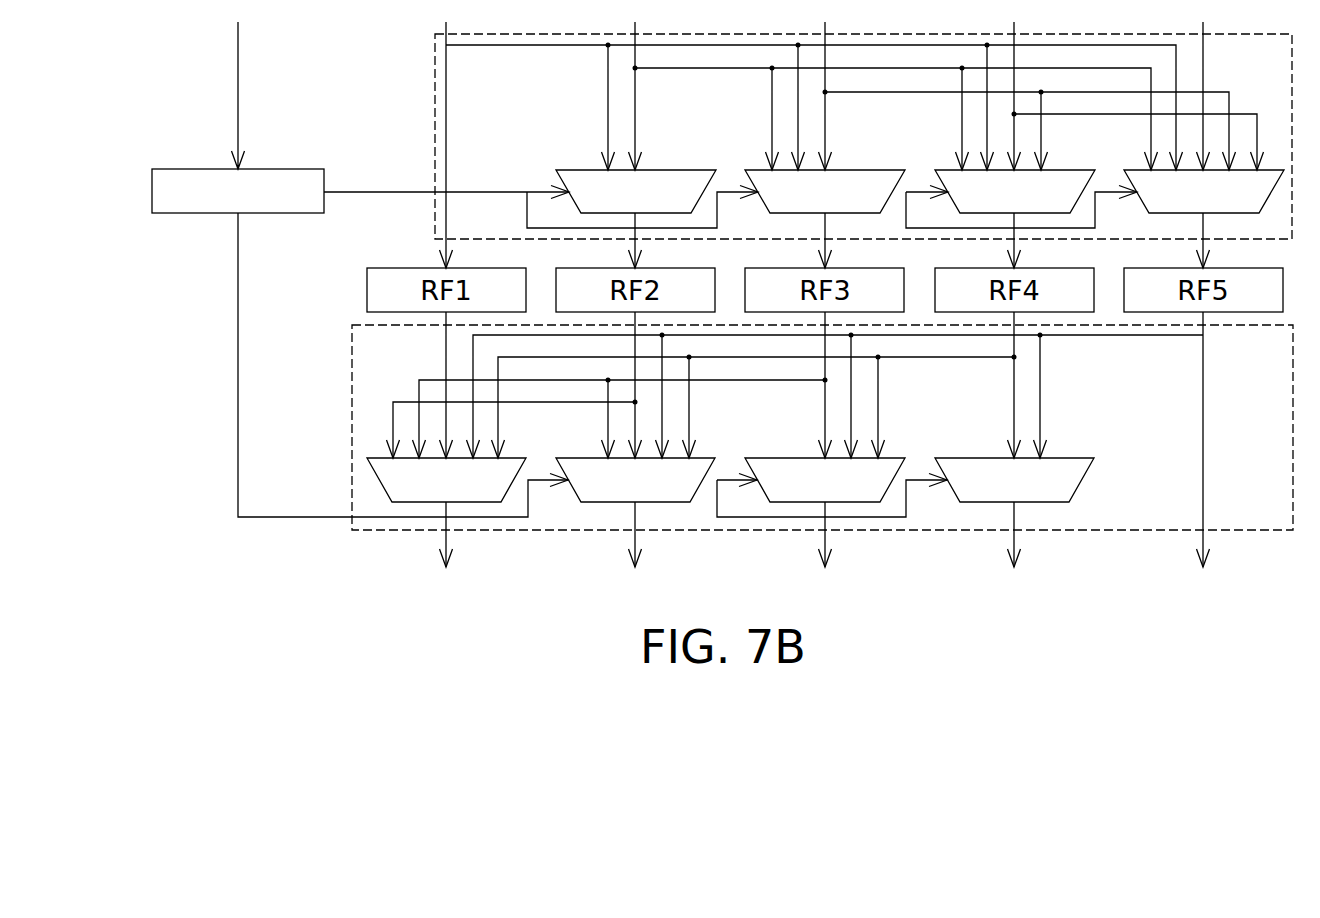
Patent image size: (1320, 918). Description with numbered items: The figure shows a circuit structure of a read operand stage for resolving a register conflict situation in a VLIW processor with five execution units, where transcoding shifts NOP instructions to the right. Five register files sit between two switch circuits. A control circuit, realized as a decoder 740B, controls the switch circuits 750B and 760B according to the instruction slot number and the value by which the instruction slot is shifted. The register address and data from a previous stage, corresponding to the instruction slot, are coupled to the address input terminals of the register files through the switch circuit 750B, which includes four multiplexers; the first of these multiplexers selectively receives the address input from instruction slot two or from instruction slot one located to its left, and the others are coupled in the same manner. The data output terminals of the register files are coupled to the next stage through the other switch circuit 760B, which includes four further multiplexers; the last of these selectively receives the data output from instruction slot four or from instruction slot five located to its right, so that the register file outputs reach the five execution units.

The decoder 740B is at (188, 168).
The switch circuit 750B is at (435, 137).
The switch circuit 760B is at (352, 375).